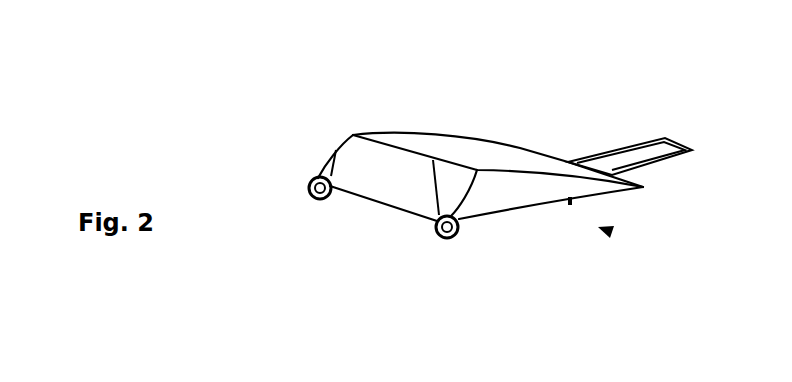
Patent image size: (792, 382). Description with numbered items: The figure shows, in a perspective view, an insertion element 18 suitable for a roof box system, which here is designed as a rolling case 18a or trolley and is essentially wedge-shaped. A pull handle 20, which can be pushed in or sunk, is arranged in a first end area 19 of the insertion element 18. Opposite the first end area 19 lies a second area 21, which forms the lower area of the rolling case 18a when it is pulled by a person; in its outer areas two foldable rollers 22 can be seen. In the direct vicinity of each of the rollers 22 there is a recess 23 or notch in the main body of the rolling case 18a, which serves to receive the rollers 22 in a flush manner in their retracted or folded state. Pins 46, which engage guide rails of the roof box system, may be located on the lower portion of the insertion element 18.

The insertion element 18 is at (316, 141).
The rolling case 18a is at (608, 232).
The first end area 19 is at (547, 137).
The pull handle 20 is at (677, 140).
The second area 21 is at (360, 227).
The foldable rollers 22 is at (309, 192).
The recess 23 is at (331, 176).
The pins 46 is at (570, 207).